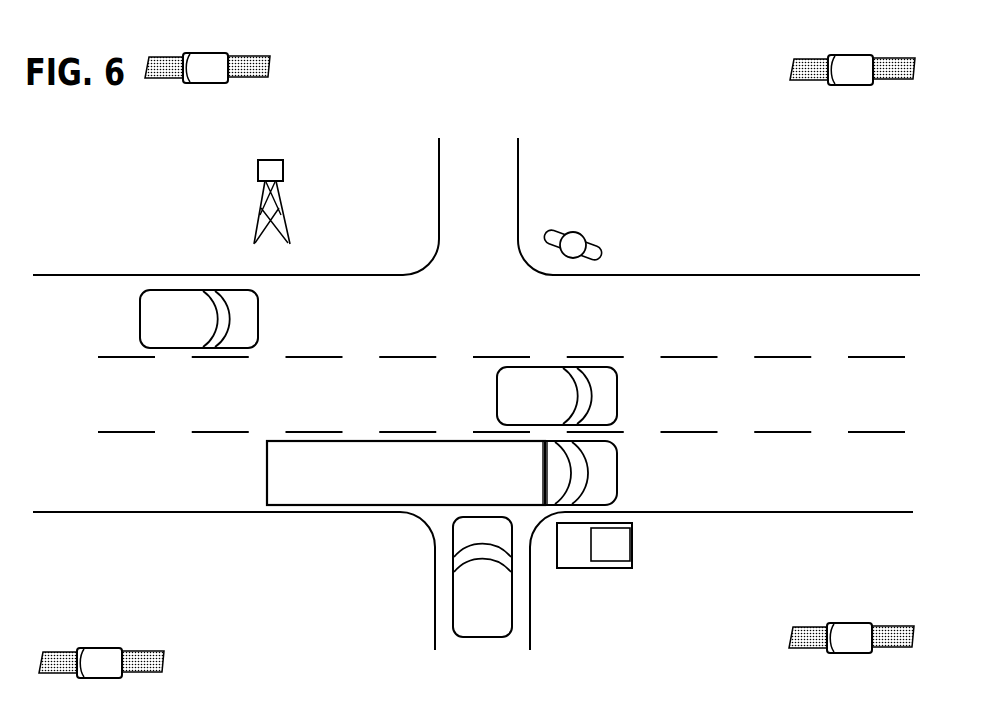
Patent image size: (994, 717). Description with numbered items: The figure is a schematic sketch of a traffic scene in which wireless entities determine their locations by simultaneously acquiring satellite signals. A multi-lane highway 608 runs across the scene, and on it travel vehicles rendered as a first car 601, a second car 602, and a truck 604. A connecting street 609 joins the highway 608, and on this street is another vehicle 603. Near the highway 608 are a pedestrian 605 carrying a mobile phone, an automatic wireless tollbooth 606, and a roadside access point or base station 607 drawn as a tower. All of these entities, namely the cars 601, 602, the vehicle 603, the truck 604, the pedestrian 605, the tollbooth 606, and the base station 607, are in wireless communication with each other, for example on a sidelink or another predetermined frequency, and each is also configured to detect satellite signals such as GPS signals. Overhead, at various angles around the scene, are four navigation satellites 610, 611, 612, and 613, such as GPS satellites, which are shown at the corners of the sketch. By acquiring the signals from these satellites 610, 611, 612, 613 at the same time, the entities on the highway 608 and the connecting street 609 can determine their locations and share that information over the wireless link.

The car 601 is at (173, 290).
The car 602 is at (618, 402).
The vehicle 603 is at (494, 637).
The truck 604 is at (618, 478).
The pedestrian 605 is at (577, 232).
The automatic wireless tollbooth 606 is at (632, 562).
The roadside access point or base station 607 is at (278, 160).
The multi-lane highway 608 is at (225, 512).
The connecting street 609 is at (433, 597).
The navigation satellite 610 is at (858, 85).
The navigation satellite 611 is at (845, 620).
The navigation satellite 612 is at (100, 648).
The navigation satellite 613 is at (195, 83).